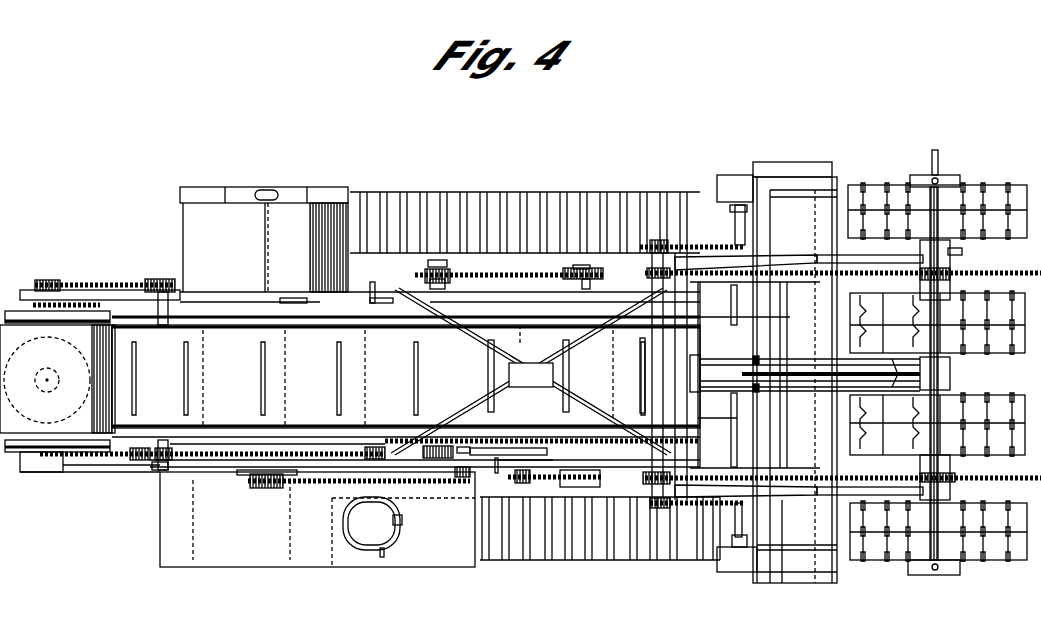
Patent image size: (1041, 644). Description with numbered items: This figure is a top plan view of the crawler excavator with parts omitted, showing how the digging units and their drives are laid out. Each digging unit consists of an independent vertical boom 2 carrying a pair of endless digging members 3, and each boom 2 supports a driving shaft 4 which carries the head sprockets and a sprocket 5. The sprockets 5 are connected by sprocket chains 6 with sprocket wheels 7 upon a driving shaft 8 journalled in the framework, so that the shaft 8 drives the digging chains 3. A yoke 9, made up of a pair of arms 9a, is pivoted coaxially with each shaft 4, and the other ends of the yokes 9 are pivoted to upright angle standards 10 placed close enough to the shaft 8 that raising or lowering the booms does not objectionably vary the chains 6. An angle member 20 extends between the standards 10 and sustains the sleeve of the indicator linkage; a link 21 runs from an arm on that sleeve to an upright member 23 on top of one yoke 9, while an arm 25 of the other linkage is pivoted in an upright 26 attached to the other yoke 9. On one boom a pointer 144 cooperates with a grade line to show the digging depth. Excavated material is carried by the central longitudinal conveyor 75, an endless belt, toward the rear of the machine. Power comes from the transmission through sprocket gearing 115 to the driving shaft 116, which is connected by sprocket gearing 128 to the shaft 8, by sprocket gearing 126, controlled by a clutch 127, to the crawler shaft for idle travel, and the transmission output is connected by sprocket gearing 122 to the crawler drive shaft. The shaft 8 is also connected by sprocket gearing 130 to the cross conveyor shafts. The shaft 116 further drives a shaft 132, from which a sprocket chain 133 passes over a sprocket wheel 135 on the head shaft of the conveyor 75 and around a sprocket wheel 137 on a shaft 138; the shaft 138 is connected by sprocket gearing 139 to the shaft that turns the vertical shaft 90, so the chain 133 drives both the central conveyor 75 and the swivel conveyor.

The vertical boom 2 is at (950, 250).
The endless digging members 3 is at (1021, 238).
The driving shaft 4 is at (940, 300).
The sprocket 5 is at (952, 272).
The sprocket chains 6 is at (757, 267).
The sprocket wheels 7 is at (640, 250).
The driving shaft 8 is at (655, 338).
The yoke 9 is at (745, 376).
The arms 9a is at (897, 262).
The upright angle standards 10 is at (697, 320).
The angle member 20 is at (643, 456).
The link 21 is at (735, 386).
The upright member 23 is at (760, 388).
The arm 25 is at (737, 357).
The upright 26 is at (760, 362).
The central longitudinal conveyor 75 is at (406, 381).
The vertical shaft 90 is at (70, 302).
The sprocket gearing 115 is at (315, 483).
The driving shaft 116 is at (413, 277).
The sprocket gearing 122 is at (557, 475).
The sprocket gearing 126 is at (512, 274).
The clutch 127 is at (440, 268).
The sprocket gearing 128 is at (547, 440).
The sprocket gearing 130 is at (130, 452).
The shaft 132 is at (465, 475).
The sprocket chain 133 is at (222, 447).
The sprocket wheel 135 is at (135, 458).
The sprocket wheel 137 is at (35, 285).
The shaft 138 is at (148, 306).
The sprocket gearing 139 is at (110, 283).
The pointer 144 is at (938, 160).